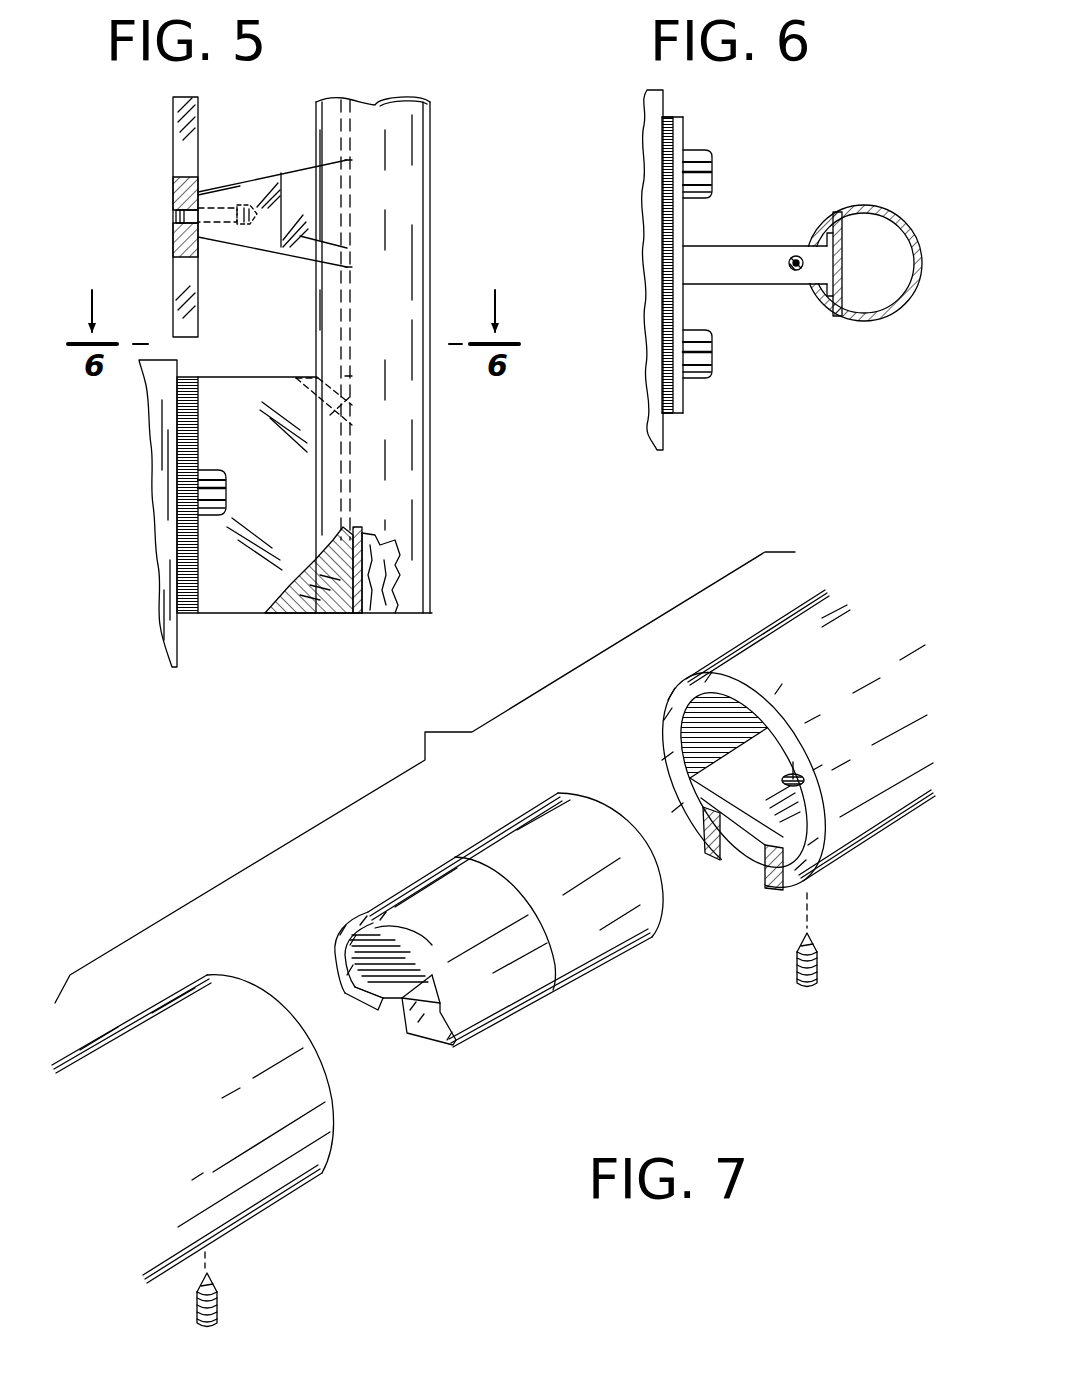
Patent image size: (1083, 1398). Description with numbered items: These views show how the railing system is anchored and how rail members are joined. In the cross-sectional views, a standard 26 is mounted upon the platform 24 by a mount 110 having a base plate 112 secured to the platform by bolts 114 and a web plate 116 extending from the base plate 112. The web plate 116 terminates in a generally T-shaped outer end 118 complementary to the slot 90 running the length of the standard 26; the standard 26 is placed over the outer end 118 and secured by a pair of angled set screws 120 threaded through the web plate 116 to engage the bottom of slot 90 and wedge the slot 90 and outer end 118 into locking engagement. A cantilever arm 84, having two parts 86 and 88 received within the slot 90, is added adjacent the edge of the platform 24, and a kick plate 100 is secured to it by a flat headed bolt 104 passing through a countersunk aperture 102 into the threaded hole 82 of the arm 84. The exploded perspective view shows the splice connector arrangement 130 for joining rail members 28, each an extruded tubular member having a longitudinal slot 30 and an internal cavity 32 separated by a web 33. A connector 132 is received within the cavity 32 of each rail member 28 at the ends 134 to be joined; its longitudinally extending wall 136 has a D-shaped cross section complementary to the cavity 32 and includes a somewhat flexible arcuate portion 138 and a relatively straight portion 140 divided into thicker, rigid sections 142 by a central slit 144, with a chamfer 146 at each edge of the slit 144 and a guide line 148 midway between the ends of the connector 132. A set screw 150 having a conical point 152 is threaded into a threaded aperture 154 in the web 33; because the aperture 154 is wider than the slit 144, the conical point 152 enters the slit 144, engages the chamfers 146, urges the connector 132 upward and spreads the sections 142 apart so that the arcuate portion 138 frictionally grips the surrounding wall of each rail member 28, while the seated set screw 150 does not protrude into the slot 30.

In FIG. 5, the platform 24 is at (177, 362).
In FIG. 5, the standard 26 is at (400, 315).
In FIG. 6, the standard 26 is at (874, 208).
In FIG. 7, the rail member 28 is at (754, 630).
In FIG. 7, the longitudinal slot 30 is at (746, 846).
In FIG. 7, the internal cavity 32 is at (740, 710).
In FIG. 7, the web 33 is at (778, 762).
In FIG. 5, the threaded hole 82 is at (224, 205).
In FIG. 5, the cantilever arm 84 is at (258, 186).
In FIG. 5, the arm part 86 is at (254, 240).
In FIG. 5, the arm part 88 is at (302, 250).
In FIG. 5, the slot 90 is at (340, 462).
In FIG. 6, the slot 90 is at (812, 286).
In FIG. 5, the kick plate 100 is at (173, 128).
In FIG. 5, the countersunk aperture 102 is at (173, 205).
In FIG. 5, the flat headed bolt 104 is at (173, 224).
In FIG. 5, the mount 110 is at (304, 527).
In FIG. 6, the mount 110 is at (755, 249).
In FIG. 5, the base plate 112 is at (192, 558).
In FIG. 6, the base plate 112 is at (680, 400).
In FIG. 5, the bolt 114 is at (212, 470).
In FIG. 6, the bolt 114 is at (708, 152).
In FIG. 5, the web plate 116 is at (218, 614).
In FIG. 6, the web plate 116 is at (716, 285).
In FIG. 5, the T-shaped outer end 118 is at (372, 480).
In FIG. 6, the T-shaped outer end 118 is at (843, 264).
In FIG. 5, the angled set screw 120 is at (296, 388).
In FIG. 6, the angled set screw 120 is at (798, 256).
In FIG. 7, the splice connector arrangement 130 is at (418, 739).
In FIG. 7, the connector 132 is at (504, 820).
In FIG. 7, the end 134 is at (658, 727).
In FIG. 7, the wall 136 is at (602, 940).
In FIG. 7, the arcuate portion 138 is at (358, 933).
In FIG. 7, the straight portion 140 is at (426, 1050).
In FIG. 7, the section 142 is at (346, 988).
In FIG. 7, the central slit 144 is at (392, 1006).
In FIG. 7, the chamfer 146 is at (381, 1006).
In FIG. 7, the guide line 148 is at (505, 862).
In FIG. 7, the set screw 150 is at (819, 965).
In FIG. 7, the conical point 152 is at (808, 938).
In FIG. 7, the threaded aperture 154 is at (805, 777).